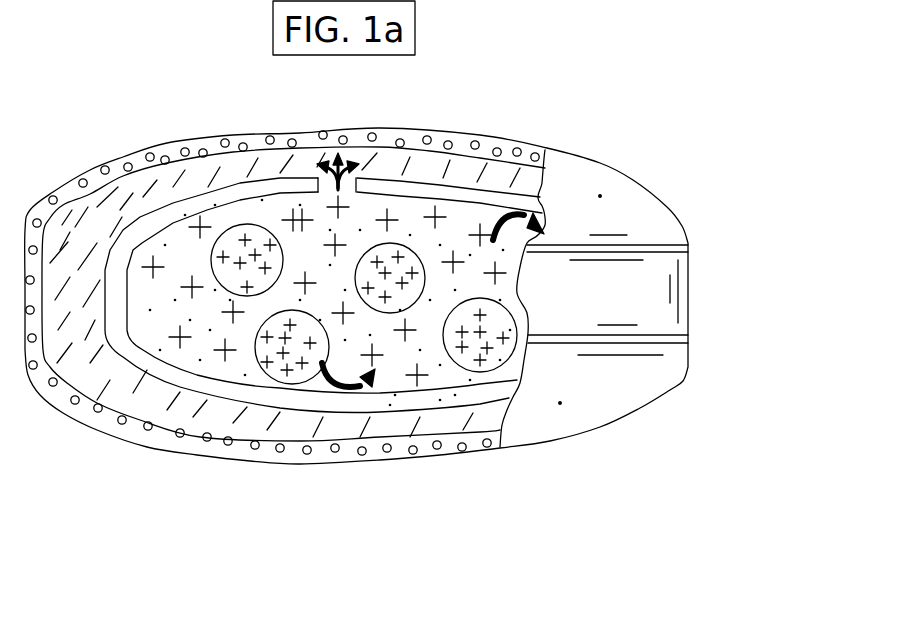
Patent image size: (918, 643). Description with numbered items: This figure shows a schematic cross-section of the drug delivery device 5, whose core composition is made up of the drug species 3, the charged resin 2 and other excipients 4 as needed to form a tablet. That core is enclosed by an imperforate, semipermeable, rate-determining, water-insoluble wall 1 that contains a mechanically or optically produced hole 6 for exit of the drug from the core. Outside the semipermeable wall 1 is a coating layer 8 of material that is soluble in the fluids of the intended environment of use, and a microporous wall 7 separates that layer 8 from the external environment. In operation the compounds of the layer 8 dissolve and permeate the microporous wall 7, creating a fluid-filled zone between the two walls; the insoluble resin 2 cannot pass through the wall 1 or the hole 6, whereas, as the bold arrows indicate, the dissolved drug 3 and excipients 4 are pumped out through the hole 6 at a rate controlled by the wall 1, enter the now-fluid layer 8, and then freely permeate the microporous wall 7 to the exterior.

The semipermeable wall 1 is at (412, 182).
The charged resin 2 is at (273, 370).
The drug species 3 is at (408, 382).
The excipients 4 is at (193, 357).
The device 5 is at (637, 130).
The hole 6 is at (380, 118).
The microporous wall 7 is at (516, 144).
The layer of soluble material 8 is at (227, 170).